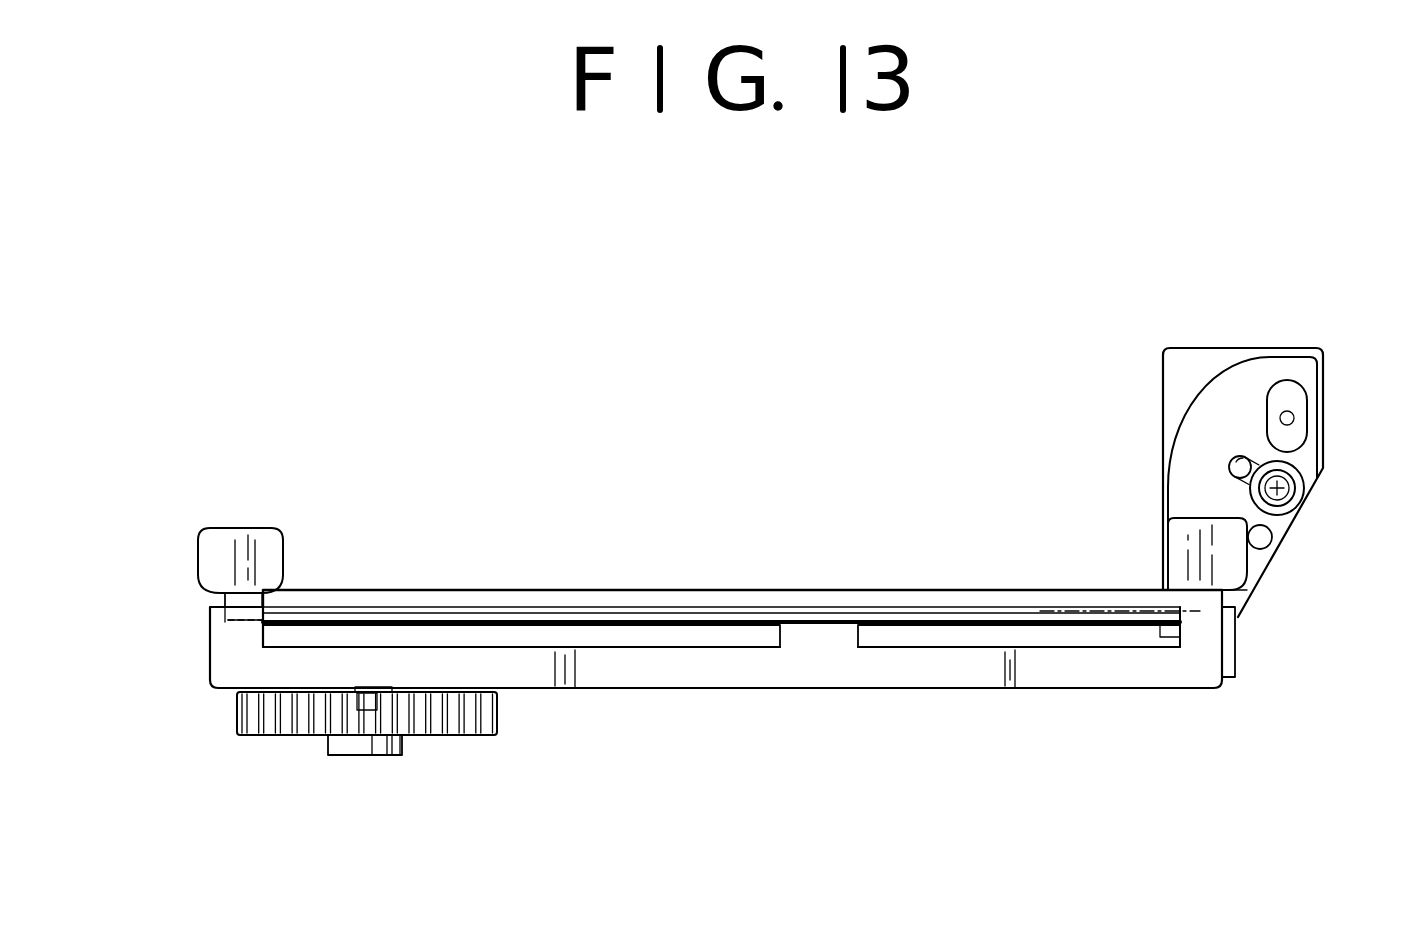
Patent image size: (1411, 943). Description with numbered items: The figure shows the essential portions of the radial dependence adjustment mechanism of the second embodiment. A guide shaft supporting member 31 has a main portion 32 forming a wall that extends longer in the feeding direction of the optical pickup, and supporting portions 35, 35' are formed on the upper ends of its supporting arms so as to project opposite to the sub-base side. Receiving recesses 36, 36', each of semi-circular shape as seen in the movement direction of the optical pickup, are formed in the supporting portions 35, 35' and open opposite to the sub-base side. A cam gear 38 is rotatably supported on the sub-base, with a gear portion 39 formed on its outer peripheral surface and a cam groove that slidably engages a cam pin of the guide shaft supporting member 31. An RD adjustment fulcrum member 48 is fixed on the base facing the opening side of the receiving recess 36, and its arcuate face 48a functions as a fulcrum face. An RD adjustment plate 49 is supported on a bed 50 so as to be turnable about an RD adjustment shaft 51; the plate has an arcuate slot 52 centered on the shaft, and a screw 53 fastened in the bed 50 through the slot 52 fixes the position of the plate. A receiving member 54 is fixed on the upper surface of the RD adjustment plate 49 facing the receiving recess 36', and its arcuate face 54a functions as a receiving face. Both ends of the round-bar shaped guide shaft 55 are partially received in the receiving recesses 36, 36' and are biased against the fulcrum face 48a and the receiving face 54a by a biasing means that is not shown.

The guide shaft supporting member 31 is at (827, 688).
The main portion 32 is at (668, 675).
The supporting portion 35 is at (184, 636).
The supporting portion 35' is at (1286, 648).
The receiving recess 36 is at (322, 589).
The receiving recess 36' is at (1120, 574).
The cam gear 38 is at (443, 737).
The gear portion 39 is at (298, 737).
The RD adjustment fulcrum member 48 is at (227, 537).
The fulcrum face 48a is at (196, 592).
The RD adjustment plate 49 is at (1265, 363).
The bed 50 is at (1192, 357).
The RD adjustment shaft 51 is at (1273, 533).
The slot 52 is at (1235, 468).
The screw 53 is at (1295, 487).
The receiving member 54 is at (1193, 532).
The receiving face 54a is at (1247, 588).
The guide shaft 55 is at (642, 603).